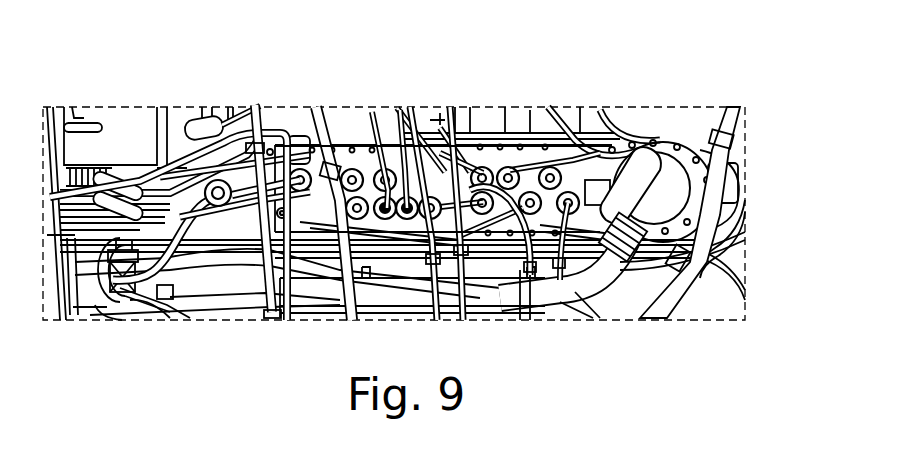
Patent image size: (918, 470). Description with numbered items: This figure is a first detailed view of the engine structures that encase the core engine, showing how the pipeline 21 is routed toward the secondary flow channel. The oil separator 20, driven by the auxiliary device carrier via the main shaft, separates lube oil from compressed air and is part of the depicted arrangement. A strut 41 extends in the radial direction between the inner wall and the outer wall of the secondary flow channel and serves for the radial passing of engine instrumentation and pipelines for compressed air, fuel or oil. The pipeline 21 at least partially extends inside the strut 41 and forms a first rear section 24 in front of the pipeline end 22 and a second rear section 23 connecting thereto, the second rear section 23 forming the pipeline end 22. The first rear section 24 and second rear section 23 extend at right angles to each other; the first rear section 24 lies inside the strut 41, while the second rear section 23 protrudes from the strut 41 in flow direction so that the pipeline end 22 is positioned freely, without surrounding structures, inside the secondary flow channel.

The oil separator 20 is at (82, 293).
The pipeline 21 is at (407, 290).
The pipeline end 22 is at (740, 185).
The second rear section 23 is at (733, 210).
The first rear section 24 is at (657, 178).
The strut 41 is at (353, 147).